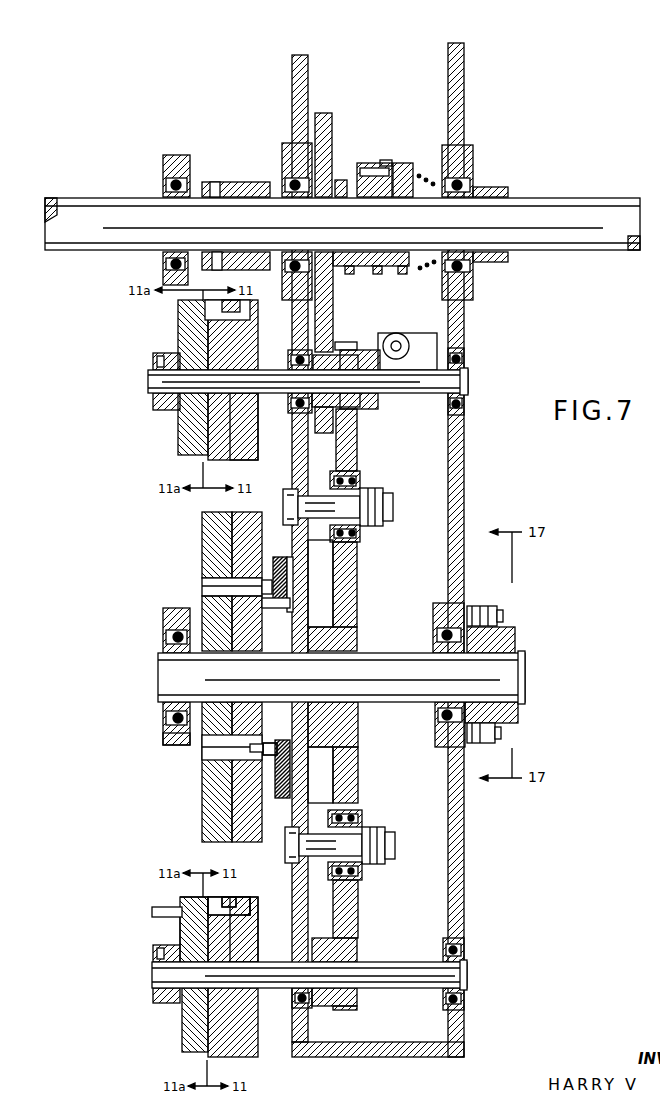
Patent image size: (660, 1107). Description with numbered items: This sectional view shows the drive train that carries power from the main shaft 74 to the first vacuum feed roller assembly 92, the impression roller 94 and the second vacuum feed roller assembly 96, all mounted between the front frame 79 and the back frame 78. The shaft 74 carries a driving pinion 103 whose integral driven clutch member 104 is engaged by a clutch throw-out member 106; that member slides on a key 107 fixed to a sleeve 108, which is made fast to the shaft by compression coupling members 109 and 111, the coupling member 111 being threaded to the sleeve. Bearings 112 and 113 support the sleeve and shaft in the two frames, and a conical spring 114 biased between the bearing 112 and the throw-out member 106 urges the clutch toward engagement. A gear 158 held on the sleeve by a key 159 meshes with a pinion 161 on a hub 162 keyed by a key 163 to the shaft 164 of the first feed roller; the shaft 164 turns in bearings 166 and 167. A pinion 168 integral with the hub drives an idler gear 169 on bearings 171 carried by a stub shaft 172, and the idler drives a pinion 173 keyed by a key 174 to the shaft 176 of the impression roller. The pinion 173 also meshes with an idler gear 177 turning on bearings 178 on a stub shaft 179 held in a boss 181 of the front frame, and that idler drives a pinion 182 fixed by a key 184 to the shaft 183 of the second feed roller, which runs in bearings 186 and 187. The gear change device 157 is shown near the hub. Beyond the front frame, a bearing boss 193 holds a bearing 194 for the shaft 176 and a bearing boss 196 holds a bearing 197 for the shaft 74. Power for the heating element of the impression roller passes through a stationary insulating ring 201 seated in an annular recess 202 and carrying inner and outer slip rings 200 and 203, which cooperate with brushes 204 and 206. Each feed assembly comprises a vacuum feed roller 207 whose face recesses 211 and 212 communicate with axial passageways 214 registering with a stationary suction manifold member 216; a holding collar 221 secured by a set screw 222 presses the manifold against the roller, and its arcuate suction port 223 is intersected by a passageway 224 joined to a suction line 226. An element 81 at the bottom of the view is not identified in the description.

The main shaft 74 is at (515, 198).
The back frame 78 is at (462, 470).
The front frame 79 is at (296, 487).
The base plate 81 is at (372, 1057).
The vacuum feed roller assembly 92 is at (222, 450).
The impression roller 94 is at (205, 820).
The second vacuum feed roller assembly 96 is at (217, 1050).
The driving pinion 103 is at (361, 168).
The driven clutch member 104 is at (371, 279).
The clutch throw-out member 106 is at (386, 160).
The key 107 is at (402, 165).
The sleeve 108 is at (503, 187).
The compression coupling member 109 is at (237, 182).
The compression coupling member 111 is at (217, 182).
The bearing 112 is at (472, 164).
The bearing 113 is at (286, 176).
The conical spring 114 is at (422, 174).
The gear change device 157 is at (408, 335).
The gear 158 is at (333, 130).
The key 159 is at (339, 180).
The pinion 161 is at (341, 342).
The hub 162 is at (366, 352).
The key 163 is at (420, 355).
The shaft 164 is at (402, 393).
The bearing 166 is at (291, 360).
The bearing 167 is at (466, 362).
The pinion 168 is at (358, 409).
The idler gear 169 is at (359, 457).
The bearings 171 is at (361, 483).
The stub shaft 172 is at (368, 529).
The pinion 173 is at (357, 627).
The key 174 is at (357, 645).
The shaft 176 is at (386, 690).
The idler gear 177 is at (358, 795).
The bearings 178 is at (362, 818).
The stub shaft 179 is at (368, 866).
The boss 181 is at (311, 816).
The pinion 182 is at (356, 960).
The shaft 183 is at (393, 971).
The key 184 is at (357, 960).
The bearing 186 is at (293, 1005).
The bearing 187 is at (466, 957).
The bearing boss 193 is at (168, 745).
The bearing 194 is at (165, 725).
The bearing boss 196 is at (164, 170).
The bearing 197 is at (163, 266).
The inner annular slip ring 200 is at (264, 603).
The stationary insulating ring 201 is at (311, 600).
The annular recess 202 is at (284, 798).
The outer annular slip ring 203 is at (272, 577).
The brush 204 is at (262, 750).
The brush 206 is at (262, 587).
The vacuum feed roller 207 is at (245, 410).
The recess 211 is at (230, 895).
The recess 212 is at (248, 900).
The passageway 214 is at (236, 897).
The suction manifold member 216 is at (180, 452).
The holding collar 221 is at (156, 408).
The set screw 222 is at (155, 358).
The arcuate suction port 223 is at (180, 927).
The passageway 224 is at (182, 900).
The suction line 226 is at (152, 909).